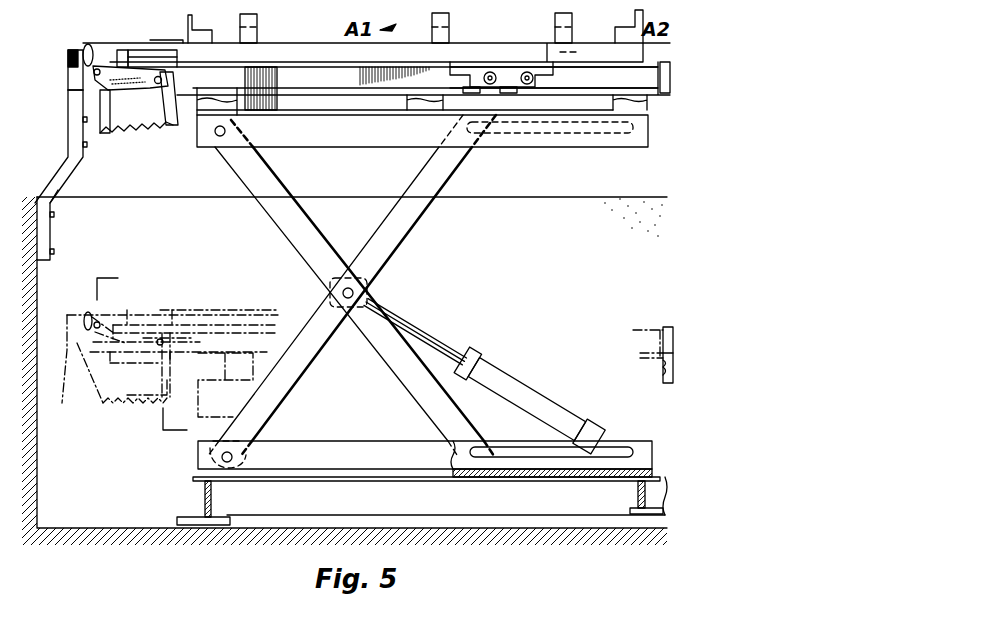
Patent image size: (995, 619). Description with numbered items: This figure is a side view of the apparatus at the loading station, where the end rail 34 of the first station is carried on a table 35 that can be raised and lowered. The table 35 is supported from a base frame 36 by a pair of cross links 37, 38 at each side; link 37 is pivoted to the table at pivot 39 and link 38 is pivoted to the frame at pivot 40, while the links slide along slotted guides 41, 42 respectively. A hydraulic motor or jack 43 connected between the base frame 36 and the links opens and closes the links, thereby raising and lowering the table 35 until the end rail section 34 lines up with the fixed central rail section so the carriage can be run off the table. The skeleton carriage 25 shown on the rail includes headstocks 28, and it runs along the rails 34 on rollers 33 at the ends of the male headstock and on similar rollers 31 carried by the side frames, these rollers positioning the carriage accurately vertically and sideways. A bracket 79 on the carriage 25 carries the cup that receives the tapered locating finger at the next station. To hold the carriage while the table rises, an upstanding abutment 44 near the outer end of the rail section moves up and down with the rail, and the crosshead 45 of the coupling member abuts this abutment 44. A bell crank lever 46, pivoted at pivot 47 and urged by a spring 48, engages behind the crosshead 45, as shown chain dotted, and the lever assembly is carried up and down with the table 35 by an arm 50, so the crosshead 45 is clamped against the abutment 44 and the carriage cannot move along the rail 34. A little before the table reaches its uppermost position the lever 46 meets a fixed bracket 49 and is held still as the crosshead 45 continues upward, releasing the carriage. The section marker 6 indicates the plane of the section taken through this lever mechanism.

The skeleton carriage 25 is at (198, 306).
The headstocks 28 is at (143, 52).
The rollers 31 is at (527, 72).
The rollers 33 is at (137, 72).
The rail 34 is at (580, 80).
The table 35 is at (371, 136).
The base frame 36 is at (392, 508).
The cross link 37 is at (287, 225).
The cross link 38 is at (318, 357).
The pivot 39 is at (218, 136).
The pivot 40 is at (221, 458).
The slotted guide 41 is at (588, 134).
The slotted guide 42 is at (623, 445).
The hydraulic motor or jack 43 is at (537, 407).
The abutment 44 is at (72, 77).
The crosshead 45 is at (87, 44).
The bell crank lever 46 is at (122, 92).
The pivot 47 is at (157, 85).
The spring 48 is at (160, 130).
The fixed bracket 49 is at (74, 93).
The arm 50 is at (260, 78).
The bracket 79 is at (148, 50).
The section line 6- 6 is at (142, 356).